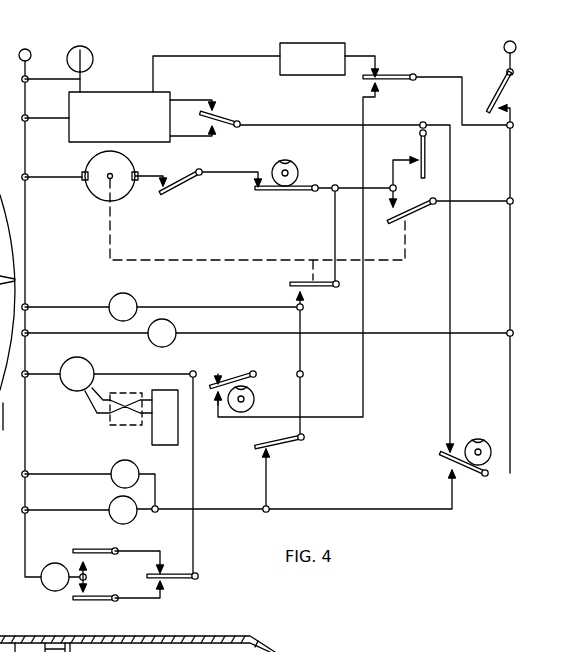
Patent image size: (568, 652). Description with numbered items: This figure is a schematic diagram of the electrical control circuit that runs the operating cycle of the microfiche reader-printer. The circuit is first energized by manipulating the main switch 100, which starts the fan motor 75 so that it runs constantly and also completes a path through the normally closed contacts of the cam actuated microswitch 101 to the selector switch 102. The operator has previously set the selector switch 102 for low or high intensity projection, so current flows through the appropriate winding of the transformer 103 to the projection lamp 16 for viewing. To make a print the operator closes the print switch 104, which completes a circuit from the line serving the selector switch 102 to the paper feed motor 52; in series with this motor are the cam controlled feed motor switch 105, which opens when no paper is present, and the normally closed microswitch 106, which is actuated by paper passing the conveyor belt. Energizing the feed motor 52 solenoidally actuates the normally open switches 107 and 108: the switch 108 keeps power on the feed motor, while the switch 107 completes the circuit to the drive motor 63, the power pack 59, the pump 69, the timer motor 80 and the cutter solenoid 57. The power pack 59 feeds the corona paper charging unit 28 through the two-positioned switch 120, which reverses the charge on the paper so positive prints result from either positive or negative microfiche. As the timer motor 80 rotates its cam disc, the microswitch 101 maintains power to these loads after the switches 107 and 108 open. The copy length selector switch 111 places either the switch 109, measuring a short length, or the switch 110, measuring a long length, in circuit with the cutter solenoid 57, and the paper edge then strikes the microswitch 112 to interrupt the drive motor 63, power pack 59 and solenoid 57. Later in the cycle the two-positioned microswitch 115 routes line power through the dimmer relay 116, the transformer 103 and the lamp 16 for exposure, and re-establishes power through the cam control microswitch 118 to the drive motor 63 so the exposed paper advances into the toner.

The projection lamp 16 is at (90, 64).
The transformer 103 is at (153, 104).
The dimmer relay 116 is at (296, 59).
The two-positioned microswitch 115 is at (381, 75).
The switch 100 is at (497, 93).
The selector switch 102 is at (222, 116).
The normally closed microswitch 106 is at (170, 180).
The feed motor switch 105 is at (302, 183).
The print switch 104 is at (418, 152).
The feed motor 52 is at (100, 185).
The normally open switch 108 is at (412, 212).
The drive motor 63 is at (135, 302).
The fan motor 75 is at (172, 333).
The normally open switch 107 is at (312, 292).
The power pack 59 is at (86, 368).
The cam control microswitch 118 is at (238, 381).
The switch 120 is at (110, 425).
The corona paper charging unit 28 is at (178, 427).
The microswitch 112 is at (280, 446).
The cam actuated microswitch 101 is at (437, 456).
The pump 69 is at (114, 470).
The timer motor 80 is at (112, 503).
The switch 110 is at (90, 548).
The copy length selector switch 111 is at (175, 582).
The switch 109 is at (97, 600).
The cutter solenoid 57 is at (50, 588).